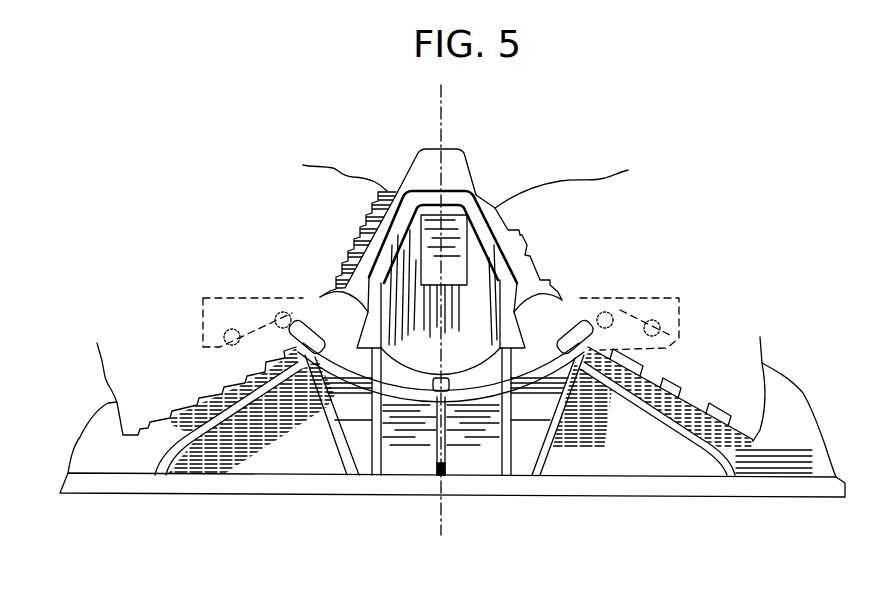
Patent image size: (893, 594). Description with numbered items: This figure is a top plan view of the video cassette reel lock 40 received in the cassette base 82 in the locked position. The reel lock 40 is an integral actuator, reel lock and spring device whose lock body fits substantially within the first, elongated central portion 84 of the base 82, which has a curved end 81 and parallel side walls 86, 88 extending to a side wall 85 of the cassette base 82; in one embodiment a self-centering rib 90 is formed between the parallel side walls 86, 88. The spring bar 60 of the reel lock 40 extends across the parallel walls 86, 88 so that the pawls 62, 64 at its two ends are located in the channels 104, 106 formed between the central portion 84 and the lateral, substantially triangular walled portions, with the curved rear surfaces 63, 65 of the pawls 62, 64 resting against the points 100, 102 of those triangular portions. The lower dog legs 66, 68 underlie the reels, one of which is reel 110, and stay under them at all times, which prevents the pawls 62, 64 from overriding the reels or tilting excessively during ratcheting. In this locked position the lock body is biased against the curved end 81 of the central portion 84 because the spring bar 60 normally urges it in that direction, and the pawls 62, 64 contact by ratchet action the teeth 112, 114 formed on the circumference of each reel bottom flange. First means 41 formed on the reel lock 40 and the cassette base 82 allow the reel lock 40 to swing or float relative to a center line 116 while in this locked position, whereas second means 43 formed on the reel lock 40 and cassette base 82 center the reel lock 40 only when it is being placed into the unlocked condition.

The reel lock 40 is at (486, 322).
The first means 41 is at (272, 408).
The second means 43 is at (437, 474).
The spring bar 60 is at (356, 385).
The pawl 62 is at (562, 357).
The rear surface of pawl 63 is at (577, 398).
The pawl 64 is at (311, 350).
The rear surface of pawl 65 is at (292, 350).
The dog leg 66 is at (645, 288).
The dog leg 68 is at (270, 297).
The curved end 81 is at (420, 168).
The cassette base 82 is at (95, 440).
The central portion 84 is at (452, 160).
The side wall 85 is at (493, 489).
The parallel side wall 86 is at (366, 448).
The parallel side wall 88 is at (500, 441).
The self-centering rib 90 is at (430, 432).
The point of lateral triangular portion 100 is at (311, 366).
The point of lateral triangular portion 102 is at (547, 415).
The channel 104 is at (222, 296).
The channel 106 is at (690, 292).
The reel 110 is at (573, 197).
The teeth 112 is at (130, 459).
The teeth 114 is at (684, 404).
The center line 116 is at (443, 113).